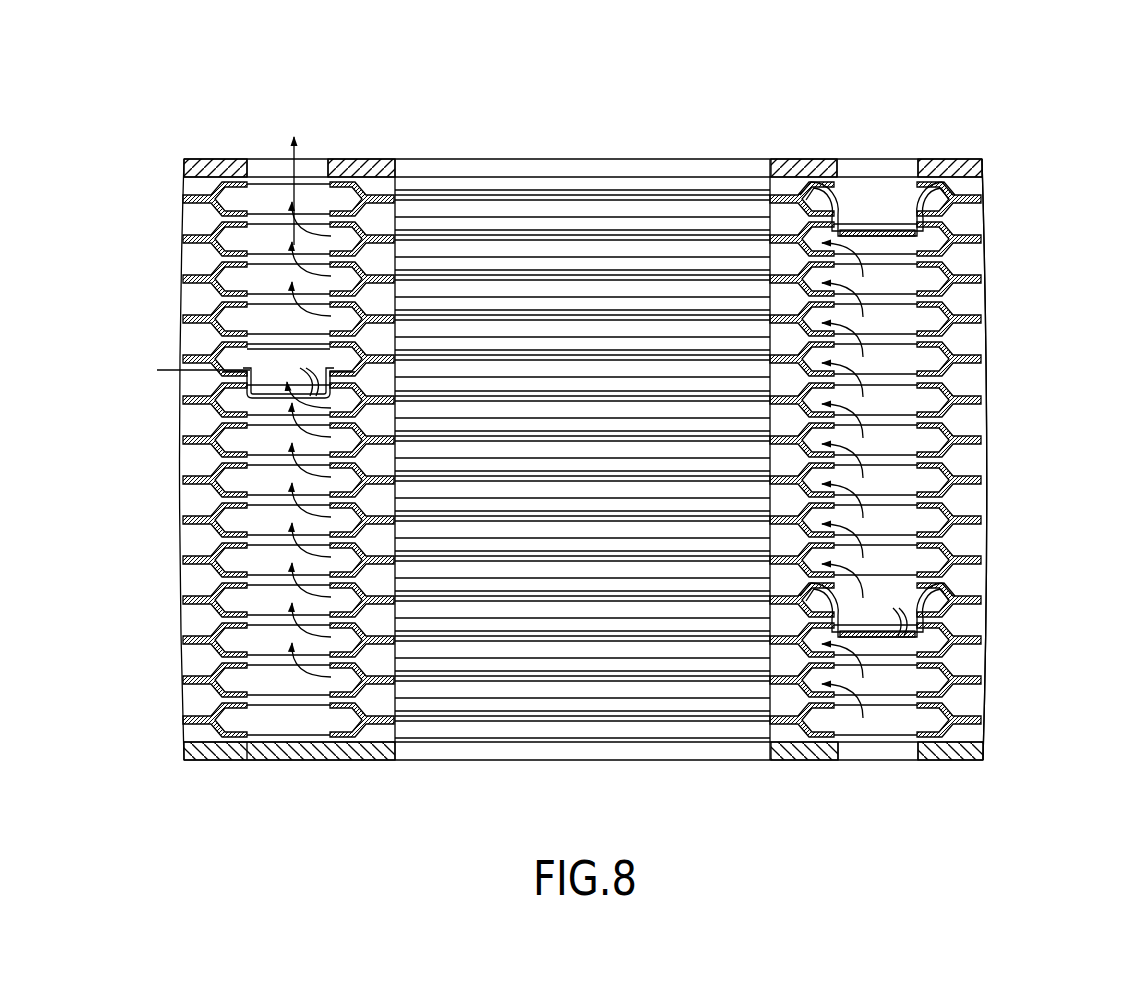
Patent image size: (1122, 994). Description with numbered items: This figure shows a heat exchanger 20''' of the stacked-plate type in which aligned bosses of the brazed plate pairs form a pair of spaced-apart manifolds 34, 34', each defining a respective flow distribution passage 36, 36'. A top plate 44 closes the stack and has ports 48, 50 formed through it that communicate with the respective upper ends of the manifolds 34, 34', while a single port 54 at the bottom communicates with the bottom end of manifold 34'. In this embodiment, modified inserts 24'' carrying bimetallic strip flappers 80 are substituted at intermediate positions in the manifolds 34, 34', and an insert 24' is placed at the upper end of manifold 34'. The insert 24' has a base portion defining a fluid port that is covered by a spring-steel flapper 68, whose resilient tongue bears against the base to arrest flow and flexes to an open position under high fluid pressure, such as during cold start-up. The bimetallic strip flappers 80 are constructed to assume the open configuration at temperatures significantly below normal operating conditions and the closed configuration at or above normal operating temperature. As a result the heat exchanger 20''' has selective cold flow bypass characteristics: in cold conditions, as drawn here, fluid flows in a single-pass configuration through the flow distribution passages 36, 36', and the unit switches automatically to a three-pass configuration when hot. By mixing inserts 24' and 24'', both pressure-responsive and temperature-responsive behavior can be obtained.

The heat exchanger 20''' is at (583, 398).
The insert 24' is at (971, 263).
The insert 24'' is at (635, 518).
The manifold 34 is at (268, 778).
The manifold 34' is at (823, 786).
The flow distribution passage 36 is at (285, 407).
The flow distribution passage 36' is at (869, 480).
The top plate 44 is at (984, 168).
The port 48 is at (322, 171).
The port 50 is at (898, 168).
The port 54 is at (898, 750).
The flapper 68 is at (870, 231).
The bimetallic strip flapper 80 is at (323, 370).